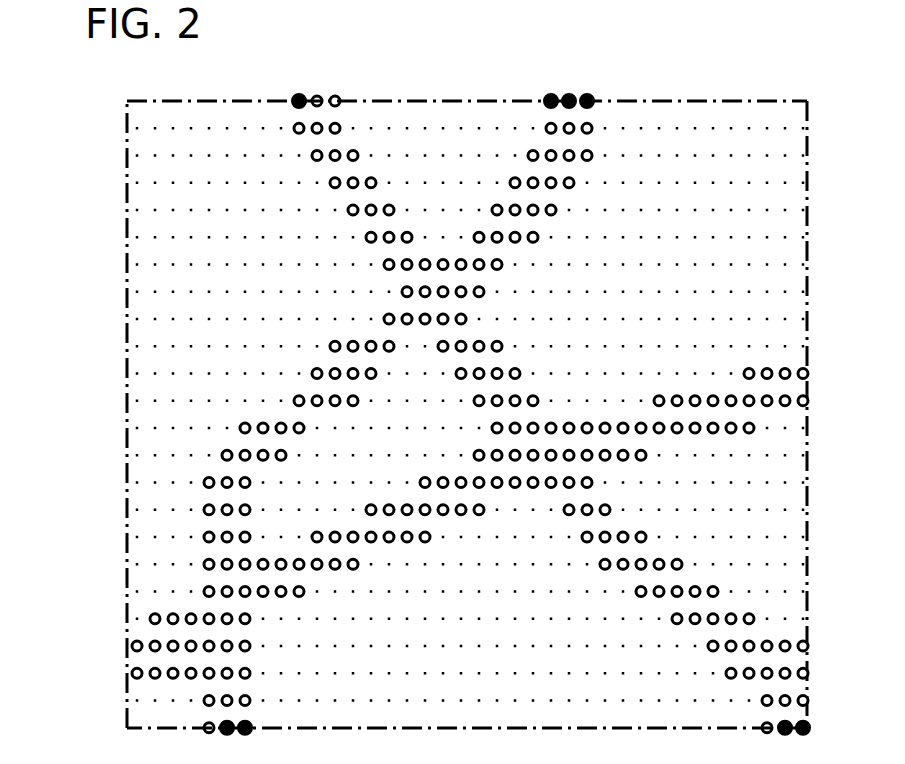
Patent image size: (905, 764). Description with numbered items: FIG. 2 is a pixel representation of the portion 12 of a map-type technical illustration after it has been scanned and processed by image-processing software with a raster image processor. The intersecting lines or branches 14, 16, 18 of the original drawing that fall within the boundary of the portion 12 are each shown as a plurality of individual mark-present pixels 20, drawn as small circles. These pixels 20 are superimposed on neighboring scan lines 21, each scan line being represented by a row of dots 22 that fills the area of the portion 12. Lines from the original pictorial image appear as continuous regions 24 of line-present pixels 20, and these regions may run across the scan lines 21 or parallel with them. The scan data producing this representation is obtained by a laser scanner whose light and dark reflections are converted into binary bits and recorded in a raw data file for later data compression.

The portion 12 is at (118, 127).
The line 14 is at (540, 146).
The line 16 is at (352, 124).
The line 18 is at (156, 677).
The pixel 20 is at (786, 402).
The scan line 21 is at (136, 178).
The dot 22 is at (713, 127).
The continuous region 24 is at (344, 98).